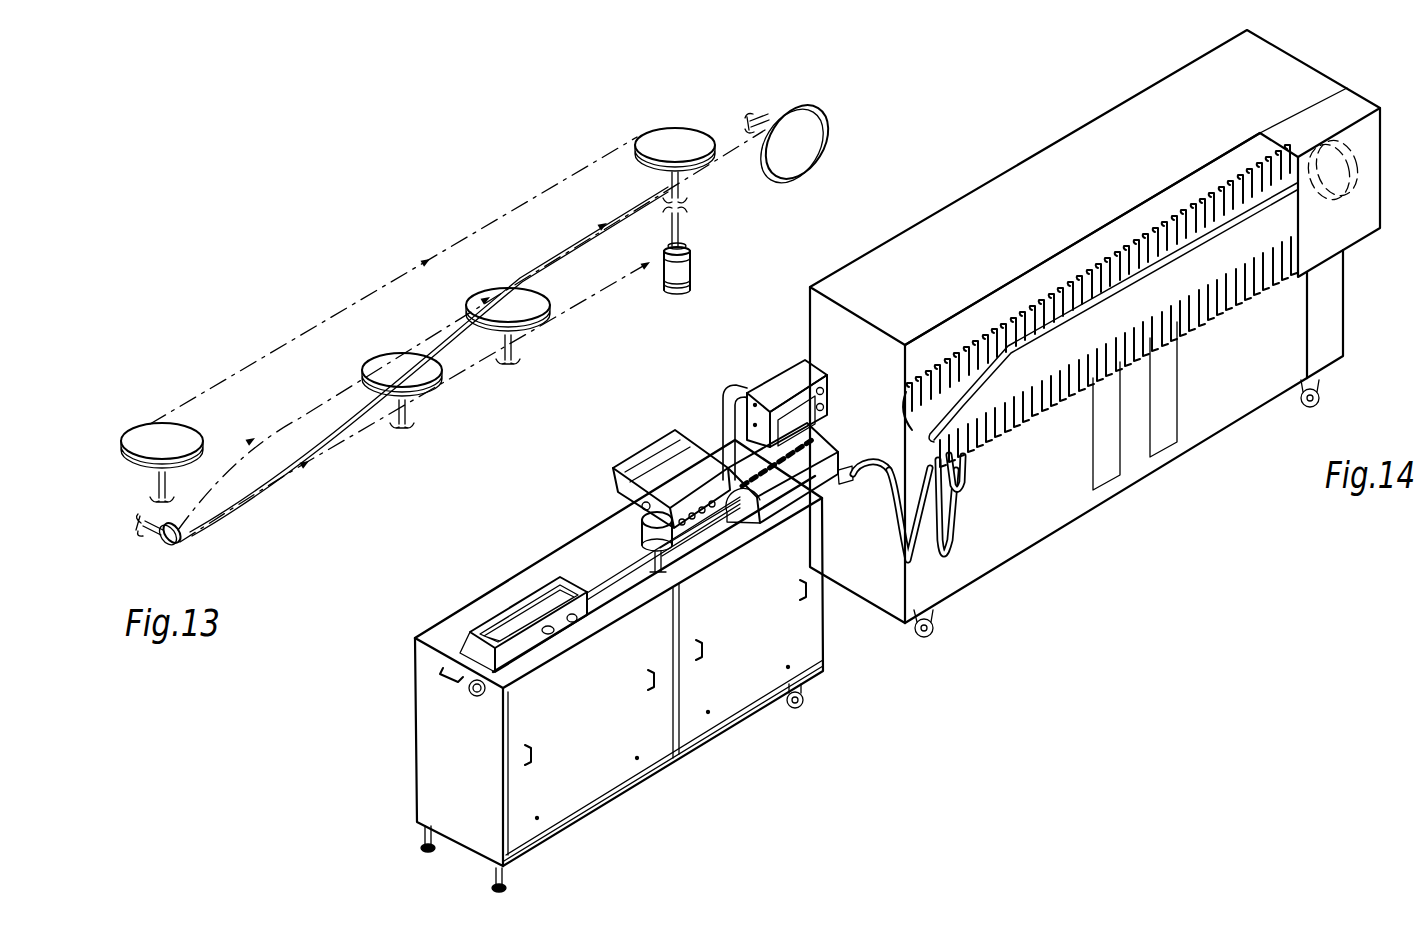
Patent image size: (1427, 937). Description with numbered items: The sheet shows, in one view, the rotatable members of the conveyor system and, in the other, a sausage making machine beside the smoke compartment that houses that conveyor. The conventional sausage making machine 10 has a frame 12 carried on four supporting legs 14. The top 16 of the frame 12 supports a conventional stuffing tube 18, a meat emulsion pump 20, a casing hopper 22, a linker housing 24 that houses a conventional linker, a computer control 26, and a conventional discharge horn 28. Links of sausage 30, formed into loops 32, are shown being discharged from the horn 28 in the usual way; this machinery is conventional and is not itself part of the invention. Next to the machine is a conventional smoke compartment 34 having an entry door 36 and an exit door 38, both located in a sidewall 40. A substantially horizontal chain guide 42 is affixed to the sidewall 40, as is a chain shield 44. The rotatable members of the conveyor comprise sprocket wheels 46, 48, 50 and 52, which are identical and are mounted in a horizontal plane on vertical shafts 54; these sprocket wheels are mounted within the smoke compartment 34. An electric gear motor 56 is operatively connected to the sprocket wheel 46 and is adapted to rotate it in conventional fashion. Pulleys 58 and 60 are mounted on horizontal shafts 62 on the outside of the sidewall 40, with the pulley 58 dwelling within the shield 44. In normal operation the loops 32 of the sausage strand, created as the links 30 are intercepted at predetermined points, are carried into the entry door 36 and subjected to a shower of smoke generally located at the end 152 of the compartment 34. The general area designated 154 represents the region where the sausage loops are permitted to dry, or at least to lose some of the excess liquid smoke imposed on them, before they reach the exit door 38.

In FIG. 14, the sausage making machine 10 is at (446, 569).
In FIG. 14, the frame 12 is at (413, 703).
In FIG. 14, the supporting legs 14 is at (420, 833).
In FIG. 14, the top 16 is at (527, 582).
In FIG. 14, the stuffing tube 18 is at (595, 582).
In FIG. 14, the meat emulsion pump 20 is at (638, 528).
In FIG. 14, the casing hopper 22 is at (652, 448).
In FIG. 14, the linker housing 24 is at (783, 497).
In FIG. 14, the computer control 26 is at (778, 388).
In FIG. 14, the discharge horn 28 is at (872, 458).
In FIG. 14, the links of sausage 30 is at (892, 506).
In FIG. 14, the loops 32 is at (955, 532).
In FIG. 14, the smoke compartment 34 is at (978, 167).
In FIG. 14, the entry door 36 is at (1115, 468).
In FIG. 14, the exit door 38 is at (1160, 408).
In FIG. 14, the sidewall 40 is at (1058, 527).
In FIG. 14, the chain guide 42 is at (1148, 268).
In FIG. 14, the chain shield 44 is at (1372, 137).
In FIG. 13, the sprocket wheel 46 is at (685, 132).
In FIG. 13, the sprocket wheel 48 is at (525, 302).
In FIG. 13, the sprocket wheel 50 is at (425, 366).
In FIG. 13, the sprocket wheel 52 is at (188, 437).
In FIG. 13, the vertical shafts 54 is at (160, 486).
In FIG. 13, the electric gear motor 56 is at (698, 270).
In FIG. 13, the pulley 58 is at (808, 150).
In FIG. 14, the pulley 58 is at (1368, 192).
In FIG. 13, the pulley 60 is at (178, 545).
In FIG. 13, the horizontal shafts 62 is at (762, 118).
In FIG. 14, the end of compartment 152 is at (958, 192).
In FIG. 14, the drying area 154 is at (1090, 113).